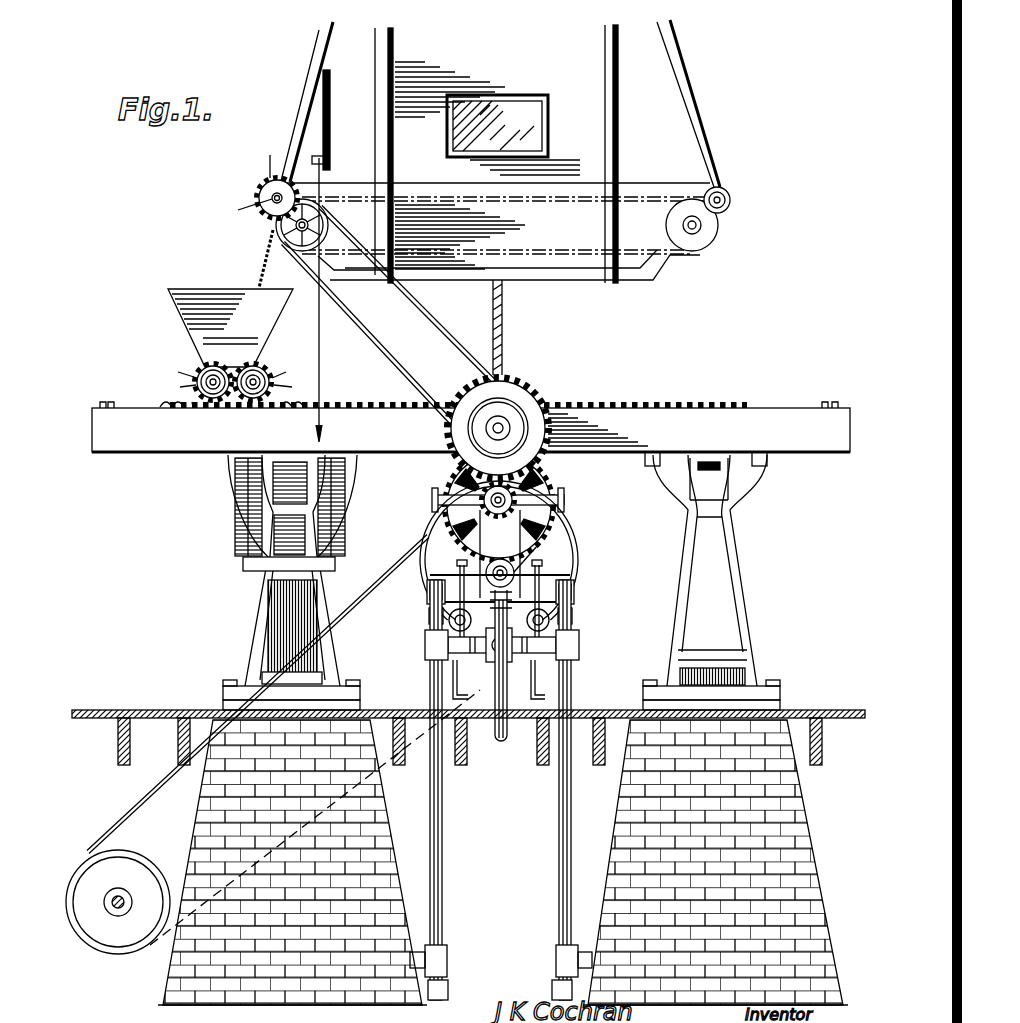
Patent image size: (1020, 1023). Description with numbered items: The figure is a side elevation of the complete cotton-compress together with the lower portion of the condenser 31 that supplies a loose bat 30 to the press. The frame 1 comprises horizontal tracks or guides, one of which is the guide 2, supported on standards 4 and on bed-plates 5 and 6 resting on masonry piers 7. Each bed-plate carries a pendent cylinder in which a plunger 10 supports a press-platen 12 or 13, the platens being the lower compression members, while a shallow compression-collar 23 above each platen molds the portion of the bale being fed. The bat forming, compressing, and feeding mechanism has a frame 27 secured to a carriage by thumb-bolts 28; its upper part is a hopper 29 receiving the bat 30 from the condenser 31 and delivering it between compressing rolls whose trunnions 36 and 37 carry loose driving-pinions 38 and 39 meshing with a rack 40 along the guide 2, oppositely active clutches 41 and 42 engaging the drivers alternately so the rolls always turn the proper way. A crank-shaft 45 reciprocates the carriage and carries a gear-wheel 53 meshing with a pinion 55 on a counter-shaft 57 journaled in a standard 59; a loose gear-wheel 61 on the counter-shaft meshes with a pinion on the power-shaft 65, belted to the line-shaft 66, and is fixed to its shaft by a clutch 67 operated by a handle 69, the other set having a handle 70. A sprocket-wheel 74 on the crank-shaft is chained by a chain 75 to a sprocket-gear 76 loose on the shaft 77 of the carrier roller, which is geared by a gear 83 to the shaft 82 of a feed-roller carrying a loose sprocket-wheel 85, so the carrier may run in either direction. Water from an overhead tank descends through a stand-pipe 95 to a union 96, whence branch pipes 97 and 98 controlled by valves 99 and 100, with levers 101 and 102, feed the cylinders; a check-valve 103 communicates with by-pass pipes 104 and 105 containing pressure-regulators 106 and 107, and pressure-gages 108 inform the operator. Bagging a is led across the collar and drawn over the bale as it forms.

The frame of the press 1 is at (805, 443).
The track or guide 2 is at (471, 435).
The standard 4 is at (745, 600).
The bed-plate 5 is at (355, 712).
The bed-plate 6 is at (776, 710).
The pier 7 is at (812, 870).
The ram or plunger 10 is at (268, 632).
The press-platen 12 is at (248, 570).
The press-platen 13 is at (700, 652).
The compression-collar or shaper 23 is at (745, 470).
The frame 27 is at (196, 420).
The thumb-bolt 28 is at (287, 408).
The hopper 29 is at (216, 272).
The loose bat 30 is at (255, 259).
The condenser 31 is at (500, 151).
The trunnion 36 is at (172, 372).
The trunnion 37 is at (288, 372).
The driving-pinion 38 is at (174, 387).
The driving-pinion 39 is at (292, 387).
The rack 40 is at (682, 406).
The clutch 41 is at (205, 367).
The clutch 42 is at (262, 367).
The crank-shaft 45 is at (498, 433).
The gear-wheel 53 is at (542, 390).
The pinion 55 is at (500, 541).
The counter-shaft 57 is at (525, 490).
The standard 59 is at (490, 730).
The gear-wheel 61 is at (560, 513).
The power-shaft 65 is at (534, 550).
The line-shaft 66 is at (119, 893).
The clutch 67 is at (468, 488).
The handle 69 is at (564, 493).
The handle 70 is at (432, 485).
The sprocket-wheel 74 is at (508, 410).
The chain 75 is at (440, 320).
The sprocket-gear 76 is at (335, 232).
The shaft 77 is at (300, 250).
The shaft 82 is at (242, 211).
The gear 83 is at (258, 189).
The sprocket-wheel 85 is at (265, 158).
The stand-pipe 95 is at (502, 313).
The union 96 is at (486, 662).
The branch pipe 97 is at (430, 690).
The branch pipe 98 is at (571, 695).
The valve 99 is at (468, 640).
The valve 100 is at (540, 650).
The lever 101 is at (458, 580).
The lever 102 is at (537, 580).
The check-valve 103 is at (503, 566).
The by-pass pipe 104 is at (440, 576).
The by-pass pipe 105 is at (555, 585).
The pressure-regulator 106 is at (428, 594).
The pressure-regulator 107 is at (574, 594).
The pressure-gage 108 is at (572, 616).
The bagging a is at (235, 500).